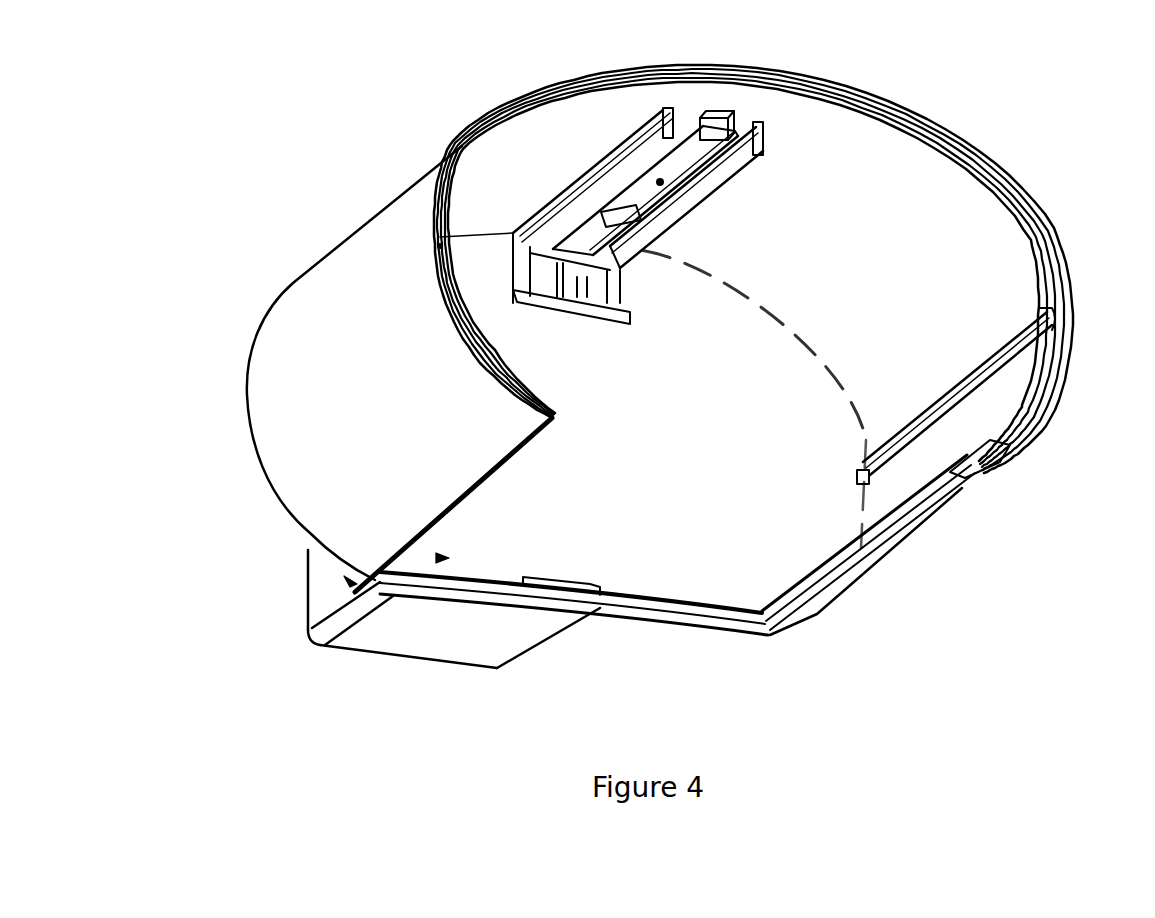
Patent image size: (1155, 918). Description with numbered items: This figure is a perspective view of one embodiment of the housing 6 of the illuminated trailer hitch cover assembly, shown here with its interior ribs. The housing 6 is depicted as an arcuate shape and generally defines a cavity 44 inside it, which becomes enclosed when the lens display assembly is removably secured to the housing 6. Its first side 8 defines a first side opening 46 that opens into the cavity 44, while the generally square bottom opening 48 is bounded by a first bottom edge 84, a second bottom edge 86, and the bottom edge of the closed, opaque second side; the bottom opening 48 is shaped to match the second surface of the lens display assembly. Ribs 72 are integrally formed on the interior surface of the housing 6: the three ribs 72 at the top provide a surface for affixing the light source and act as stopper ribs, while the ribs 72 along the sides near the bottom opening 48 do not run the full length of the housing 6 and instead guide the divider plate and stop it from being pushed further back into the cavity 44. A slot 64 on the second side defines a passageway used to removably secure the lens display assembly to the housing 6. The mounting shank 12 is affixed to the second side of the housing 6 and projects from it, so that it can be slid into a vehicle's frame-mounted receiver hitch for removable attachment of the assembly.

The housing 6 is at (362, 244).
The first side 8 is at (863, 92).
The mounting shank 12 is at (362, 646).
The cavity 44 is at (879, 339).
The first side opening 46 is at (915, 110).
The bottom opening 48 is at (438, 558).
The slot 64 is at (593, 597).
The ribs 72 is at (708, 125).
The first bottom edge 84 is at (962, 484).
The second bottom edge 86 is at (462, 492).